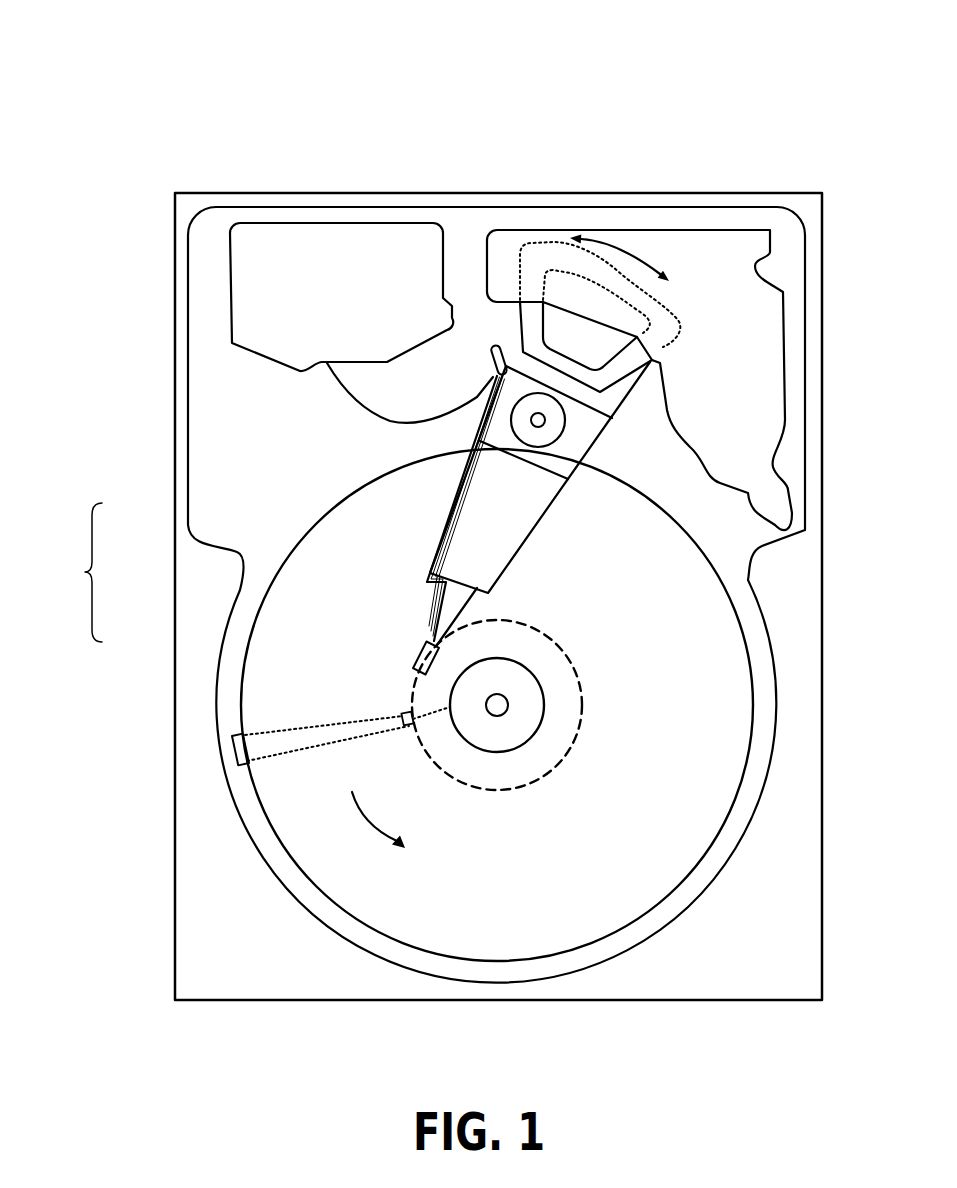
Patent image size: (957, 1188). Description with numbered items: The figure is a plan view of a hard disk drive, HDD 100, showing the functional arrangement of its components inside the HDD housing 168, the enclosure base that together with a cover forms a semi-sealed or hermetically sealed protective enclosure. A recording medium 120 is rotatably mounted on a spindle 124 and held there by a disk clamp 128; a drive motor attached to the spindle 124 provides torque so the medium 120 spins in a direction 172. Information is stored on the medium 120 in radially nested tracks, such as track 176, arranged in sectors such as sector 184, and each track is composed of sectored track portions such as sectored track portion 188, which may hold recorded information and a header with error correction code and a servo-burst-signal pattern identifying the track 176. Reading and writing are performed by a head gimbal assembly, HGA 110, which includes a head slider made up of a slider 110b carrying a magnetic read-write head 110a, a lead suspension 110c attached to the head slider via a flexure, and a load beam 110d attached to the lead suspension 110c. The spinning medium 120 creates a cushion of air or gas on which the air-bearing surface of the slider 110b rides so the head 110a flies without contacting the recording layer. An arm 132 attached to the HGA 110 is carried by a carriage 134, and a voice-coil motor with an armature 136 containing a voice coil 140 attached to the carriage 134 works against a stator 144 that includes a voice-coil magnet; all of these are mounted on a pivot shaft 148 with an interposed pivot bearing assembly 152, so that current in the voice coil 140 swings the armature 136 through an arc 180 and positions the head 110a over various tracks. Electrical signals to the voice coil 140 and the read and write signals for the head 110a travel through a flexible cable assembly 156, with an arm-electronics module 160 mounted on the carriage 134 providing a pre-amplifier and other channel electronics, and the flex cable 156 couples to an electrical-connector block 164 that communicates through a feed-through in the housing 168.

The hard disk drive 100 is at (466, 500).
The head gimbal assembly 110 is at (271, 525).
The magnetic read-write head 110a is at (417, 665).
The slider 110b is at (437, 650).
The lead suspension 110c is at (443, 607).
The load beam 110d is at (427, 575).
The recording medium 120 is at (680, 652).
The spindle 124 is at (502, 700).
The disk clamp 128 is at (523, 718).
The arm 132 is at (490, 535).
The carriage 134 is at (556, 458).
The armature 136 is at (512, 318).
The voice coil 140 is at (533, 312).
The stator 144 is at (752, 323).
The pivot shaft 148 is at (545, 420).
The pivot bearing assembly 152 is at (552, 432).
The flexible cable assembly 156 is at (357, 397).
The arm-electronics module 160 is at (488, 385).
The electrical-connector block 164 is at (255, 295).
The HDD housing 168 is at (802, 207).
The direction 172 is at (383, 826).
The track 176 is at (573, 660).
The arc 180 is at (618, 250).
The sector 184 is at (232, 748).
The sectored track portion 188 is at (405, 715).